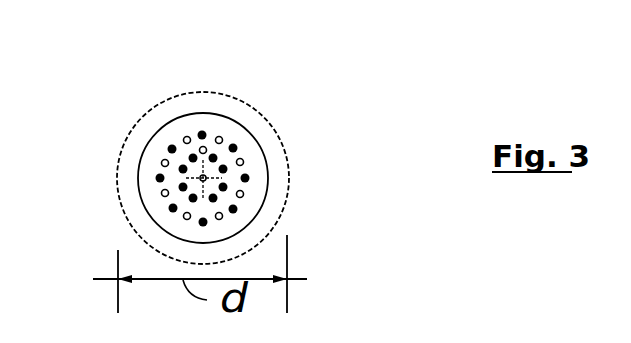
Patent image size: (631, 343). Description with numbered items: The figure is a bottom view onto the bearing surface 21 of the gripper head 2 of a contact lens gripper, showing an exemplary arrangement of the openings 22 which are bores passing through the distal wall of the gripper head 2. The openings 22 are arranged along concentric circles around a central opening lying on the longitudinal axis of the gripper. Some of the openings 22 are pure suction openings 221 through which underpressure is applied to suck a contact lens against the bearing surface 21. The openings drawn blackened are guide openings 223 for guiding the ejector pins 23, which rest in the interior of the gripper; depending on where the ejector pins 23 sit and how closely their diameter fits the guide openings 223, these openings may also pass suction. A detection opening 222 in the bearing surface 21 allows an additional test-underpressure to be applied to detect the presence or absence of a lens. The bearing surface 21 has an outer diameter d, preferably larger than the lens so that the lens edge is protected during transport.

The gripper head 2 is at (89, 134).
The bearing surface 21 is at (216, 120).
The openings 22 is at (161, 218).
The ejector pins 23 is at (202, 135).
The suction openings 221 is at (243, 191).
The detection opening 222 is at (207, 150).
The guide openings 223 is at (203, 222).